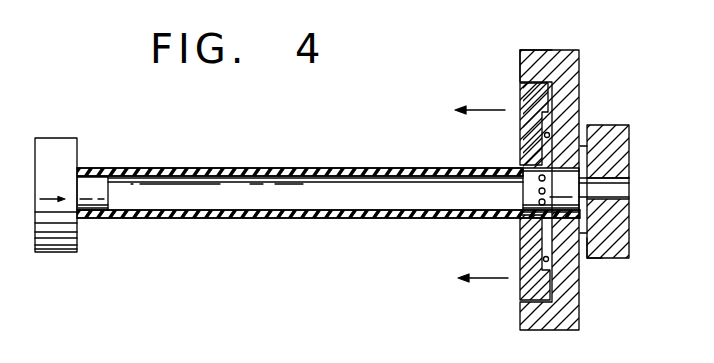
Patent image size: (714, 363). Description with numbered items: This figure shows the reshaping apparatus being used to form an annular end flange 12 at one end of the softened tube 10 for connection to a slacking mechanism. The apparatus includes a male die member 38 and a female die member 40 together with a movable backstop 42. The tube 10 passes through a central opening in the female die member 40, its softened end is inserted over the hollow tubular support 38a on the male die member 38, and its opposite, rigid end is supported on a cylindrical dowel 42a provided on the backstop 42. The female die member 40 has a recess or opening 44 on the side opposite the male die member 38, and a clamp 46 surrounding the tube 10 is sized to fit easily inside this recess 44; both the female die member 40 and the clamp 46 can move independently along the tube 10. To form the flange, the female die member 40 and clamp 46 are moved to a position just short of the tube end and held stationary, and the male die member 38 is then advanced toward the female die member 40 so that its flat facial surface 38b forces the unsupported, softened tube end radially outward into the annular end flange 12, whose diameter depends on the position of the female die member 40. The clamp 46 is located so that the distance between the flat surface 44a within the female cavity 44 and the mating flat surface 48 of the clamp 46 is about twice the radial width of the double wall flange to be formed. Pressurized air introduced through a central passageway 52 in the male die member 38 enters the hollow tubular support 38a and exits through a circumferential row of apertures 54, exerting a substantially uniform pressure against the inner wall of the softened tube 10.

The softened tube 10 is at (282, 168).
The annular end flange 12 is at (586, 157).
The male die member 38 is at (624, 158).
The hollow tubular support 38a is at (525, 193).
The flat facial surface 38b is at (586, 258).
The female die member 40 is at (560, 53).
The movable backstop 42 is at (60, 143).
The cylindrical dowel 42a is at (97, 178).
The recess or opening 44 is at (520, 81).
The flat surface 44a is at (550, 134).
The clamp 46 is at (522, 107).
The mating flat surface 48 is at (542, 258).
The central passageway 52 is at (632, 193).
The apertures 54 is at (538, 175).